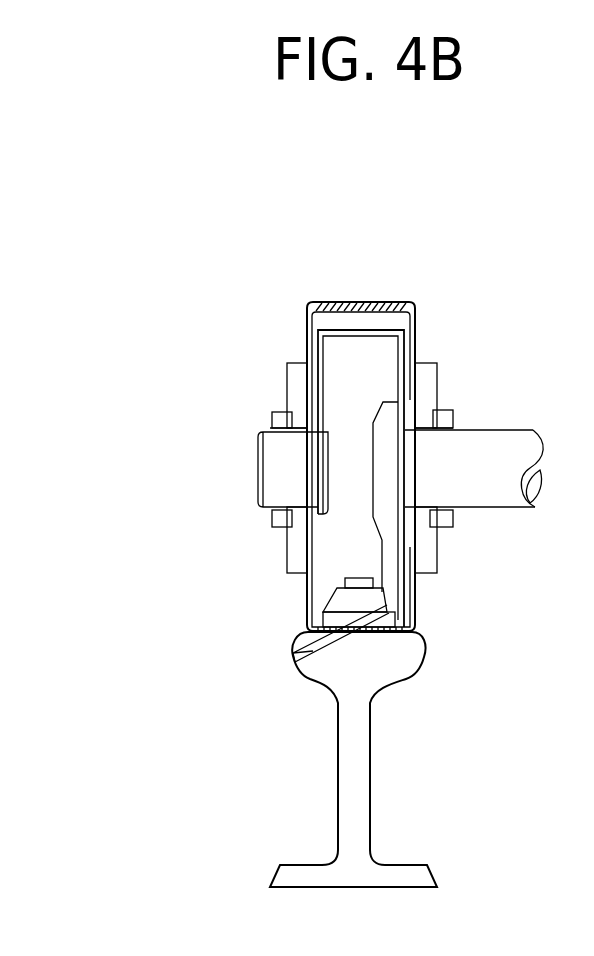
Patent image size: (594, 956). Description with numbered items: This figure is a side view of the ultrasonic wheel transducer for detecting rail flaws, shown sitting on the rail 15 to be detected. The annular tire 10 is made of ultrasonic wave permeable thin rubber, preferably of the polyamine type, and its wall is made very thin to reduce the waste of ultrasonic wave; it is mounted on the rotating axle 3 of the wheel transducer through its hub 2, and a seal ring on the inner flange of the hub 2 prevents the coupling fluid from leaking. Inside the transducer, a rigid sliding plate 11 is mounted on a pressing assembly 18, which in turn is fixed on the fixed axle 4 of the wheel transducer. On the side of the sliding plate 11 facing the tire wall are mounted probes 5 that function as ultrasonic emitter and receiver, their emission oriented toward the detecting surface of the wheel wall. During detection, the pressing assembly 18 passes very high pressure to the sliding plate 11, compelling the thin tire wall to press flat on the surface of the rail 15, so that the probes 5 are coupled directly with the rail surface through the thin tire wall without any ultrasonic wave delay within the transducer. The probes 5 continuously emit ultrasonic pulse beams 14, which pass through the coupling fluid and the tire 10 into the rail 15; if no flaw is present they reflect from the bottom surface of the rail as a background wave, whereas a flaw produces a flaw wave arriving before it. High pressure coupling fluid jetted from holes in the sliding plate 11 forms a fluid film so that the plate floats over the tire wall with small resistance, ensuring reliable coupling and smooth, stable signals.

The hub 2 is at (293, 380).
The rotating axle 3 is at (280, 417).
The fixed axle 4 is at (292, 472).
The probes 5 is at (352, 602).
The tire 10 is at (307, 325).
The sliding plate 11 is at (337, 618).
The ultrasonic pulse beams 14 is at (292, 655).
The rail 15 is at (350, 847).
The pressing assembly 18 is at (380, 492).